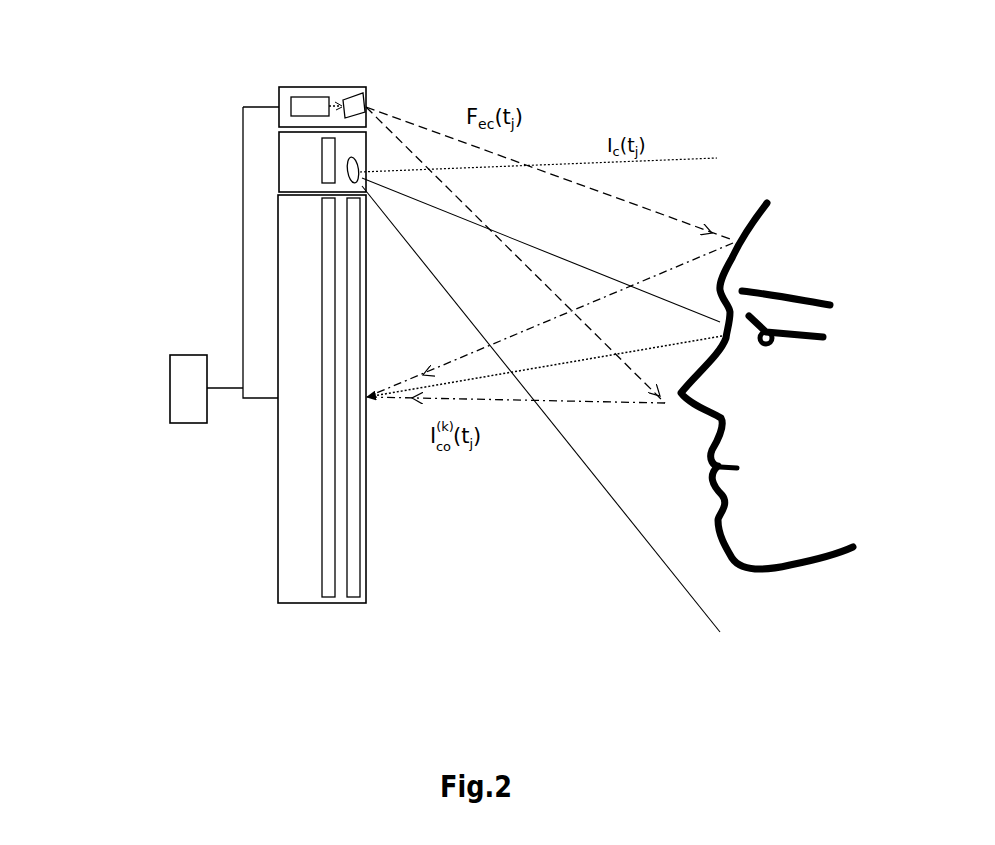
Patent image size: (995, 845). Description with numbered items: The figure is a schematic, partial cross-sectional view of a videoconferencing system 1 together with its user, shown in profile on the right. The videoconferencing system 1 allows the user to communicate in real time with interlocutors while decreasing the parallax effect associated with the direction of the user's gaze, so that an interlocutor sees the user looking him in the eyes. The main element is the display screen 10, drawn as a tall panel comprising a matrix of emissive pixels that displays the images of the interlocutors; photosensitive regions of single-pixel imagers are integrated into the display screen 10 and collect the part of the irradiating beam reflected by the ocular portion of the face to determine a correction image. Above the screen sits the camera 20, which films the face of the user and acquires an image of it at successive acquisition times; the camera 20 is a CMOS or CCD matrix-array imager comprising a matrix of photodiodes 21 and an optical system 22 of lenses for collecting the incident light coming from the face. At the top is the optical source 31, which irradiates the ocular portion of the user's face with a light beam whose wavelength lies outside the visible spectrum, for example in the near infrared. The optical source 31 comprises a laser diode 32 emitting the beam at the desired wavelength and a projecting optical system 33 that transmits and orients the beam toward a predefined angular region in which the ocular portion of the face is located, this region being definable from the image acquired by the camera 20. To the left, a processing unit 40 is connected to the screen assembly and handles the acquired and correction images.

The videoconferencing system 1 is at (108, 110).
The display screen 10 is at (322, 604).
The camera 20 is at (277, 160).
The matrix of photodiodes 21 is at (320, 160).
The optical system 22 is at (346, 172).
The optical source 31 is at (323, 86).
The laser diode 32 is at (309, 97).
The projecting optical system 33 is at (352, 95).
The processing unit 40 is at (163, 380).